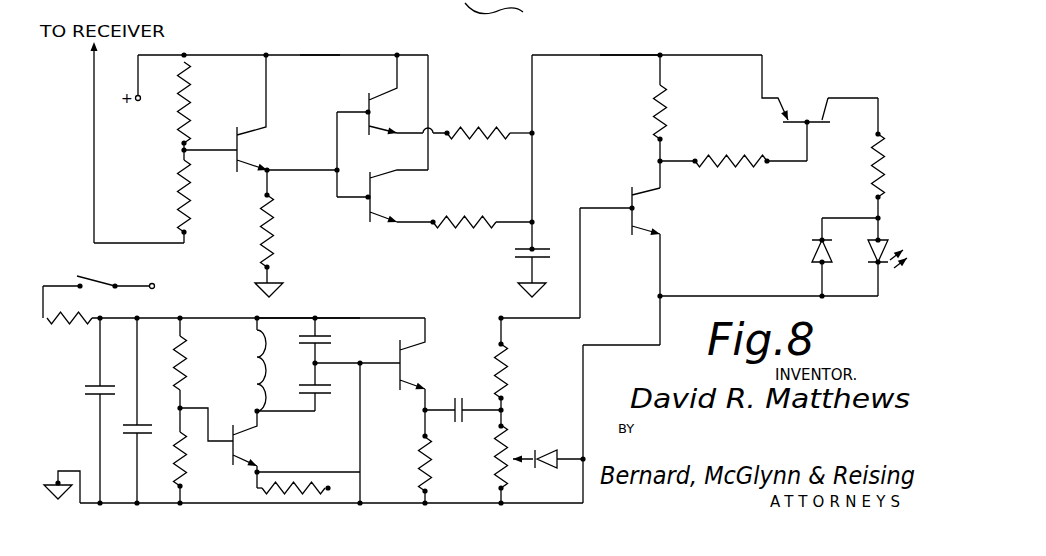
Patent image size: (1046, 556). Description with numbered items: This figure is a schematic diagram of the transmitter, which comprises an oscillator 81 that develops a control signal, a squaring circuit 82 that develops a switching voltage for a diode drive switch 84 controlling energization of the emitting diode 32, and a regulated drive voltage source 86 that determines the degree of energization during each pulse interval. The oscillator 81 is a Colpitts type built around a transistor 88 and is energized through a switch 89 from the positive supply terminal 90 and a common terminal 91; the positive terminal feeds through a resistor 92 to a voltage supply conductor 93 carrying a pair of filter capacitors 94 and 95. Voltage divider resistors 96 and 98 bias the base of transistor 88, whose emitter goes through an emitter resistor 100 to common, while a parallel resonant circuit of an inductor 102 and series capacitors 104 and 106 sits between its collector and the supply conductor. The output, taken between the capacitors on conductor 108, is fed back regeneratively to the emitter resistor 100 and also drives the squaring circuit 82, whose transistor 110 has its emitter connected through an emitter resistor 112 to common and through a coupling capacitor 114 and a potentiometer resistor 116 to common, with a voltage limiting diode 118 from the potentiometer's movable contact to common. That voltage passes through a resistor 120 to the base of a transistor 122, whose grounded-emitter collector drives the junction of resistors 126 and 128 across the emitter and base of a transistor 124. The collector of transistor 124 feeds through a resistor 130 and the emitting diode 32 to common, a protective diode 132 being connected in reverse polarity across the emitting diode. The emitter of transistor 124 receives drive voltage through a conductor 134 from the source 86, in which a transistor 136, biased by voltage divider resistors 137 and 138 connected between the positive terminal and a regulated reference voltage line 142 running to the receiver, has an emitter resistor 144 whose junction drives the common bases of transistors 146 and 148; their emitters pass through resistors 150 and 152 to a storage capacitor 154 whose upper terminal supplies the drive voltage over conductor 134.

The emitting diode 32 is at (881, 238).
The oscillator 81 is at (337, 316).
The squaring circuit 82 is at (508, 314).
The diode drive switch 84 is at (779, 90).
The regulated drive voltage source 86 is at (320, 52).
The transistor 88 is at (236, 428).
The switch 89 is at (98, 283).
The positive supply terminal 90 is at (152, 290).
The common terminal 91 is at (57, 478).
The resistor 92 is at (70, 322).
The voltage supply conductor 93 is at (280, 317).
The filter capacitor 94 is at (92, 393).
The filter capacitor 95 is at (136, 440).
The voltage divider resistor 96 is at (178, 372).
The voltage divider resistor 98 is at (185, 472).
The emitter resistor 100 is at (332, 486).
The inductor 102 is at (257, 335).
The series capacitor 104 is at (332, 342).
The series capacitor 106 is at (330, 395).
The conductor 108 is at (370, 366).
The transistor 110 is at (403, 355).
The emitter resistor 112 is at (432, 466).
The coupling capacitor 114 is at (447, 398).
The potentiometer resistor 116 is at (504, 425).
The voltage limiting diode 118 is at (547, 452).
The resistor 120 is at (506, 365).
The transistor 122 is at (632, 200).
The transistor 124 is at (812, 123).
The resistor 126 is at (656, 110).
The resistor 128 is at (727, 156).
The resistor 130 is at (886, 148).
The protective diode 132 is at (813, 254).
The conductor 134 is at (628, 55).
The transistor 136 is at (236, 137).
The voltage divider resistor 137 is at (183, 95).
The voltage divider resistor 138 is at (182, 192).
The regulated reference voltage line 142 is at (94, 163).
The emitter resistor 144 is at (272, 222).
The transistor 146 is at (368, 96).
The transistor 148 is at (368, 205).
The resistor 150 is at (452, 128).
The resistor 152 is at (447, 218).
The storage capacitor 154 is at (533, 248).